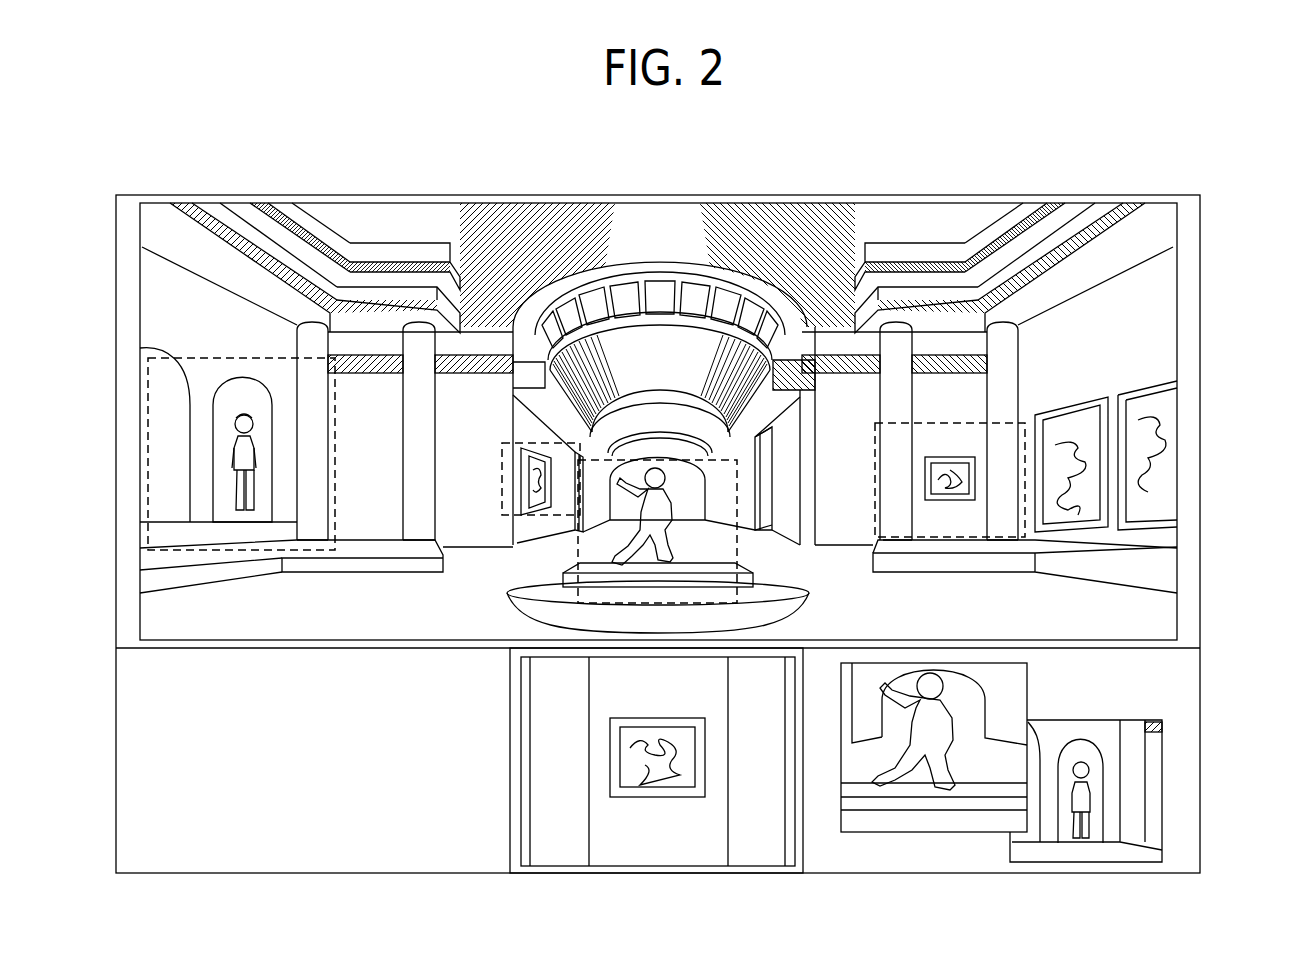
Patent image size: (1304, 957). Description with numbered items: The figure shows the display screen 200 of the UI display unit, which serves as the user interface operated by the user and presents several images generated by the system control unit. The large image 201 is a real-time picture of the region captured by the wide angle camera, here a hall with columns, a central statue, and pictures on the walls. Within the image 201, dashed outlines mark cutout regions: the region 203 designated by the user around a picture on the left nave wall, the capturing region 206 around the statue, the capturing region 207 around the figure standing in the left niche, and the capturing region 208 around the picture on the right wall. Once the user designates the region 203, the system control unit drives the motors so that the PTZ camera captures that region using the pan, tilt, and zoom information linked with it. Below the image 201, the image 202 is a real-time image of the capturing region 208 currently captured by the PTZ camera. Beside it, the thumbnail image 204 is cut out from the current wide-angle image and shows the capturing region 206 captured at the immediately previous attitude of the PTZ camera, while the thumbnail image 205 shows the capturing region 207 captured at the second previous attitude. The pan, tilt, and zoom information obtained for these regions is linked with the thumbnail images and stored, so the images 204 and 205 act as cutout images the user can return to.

The display screen 200 is at (1200, 255).
The image 201 is at (1177, 362).
The image 202 is at (510, 695).
The region 203 is at (497, 502).
The thumbnail image 204 is at (1027, 694).
The thumbnail image 205 is at (1162, 808).
The capturing region 206 is at (578, 545).
The capturing region 207 is at (148, 448).
The capturing region 208 is at (950, 540).